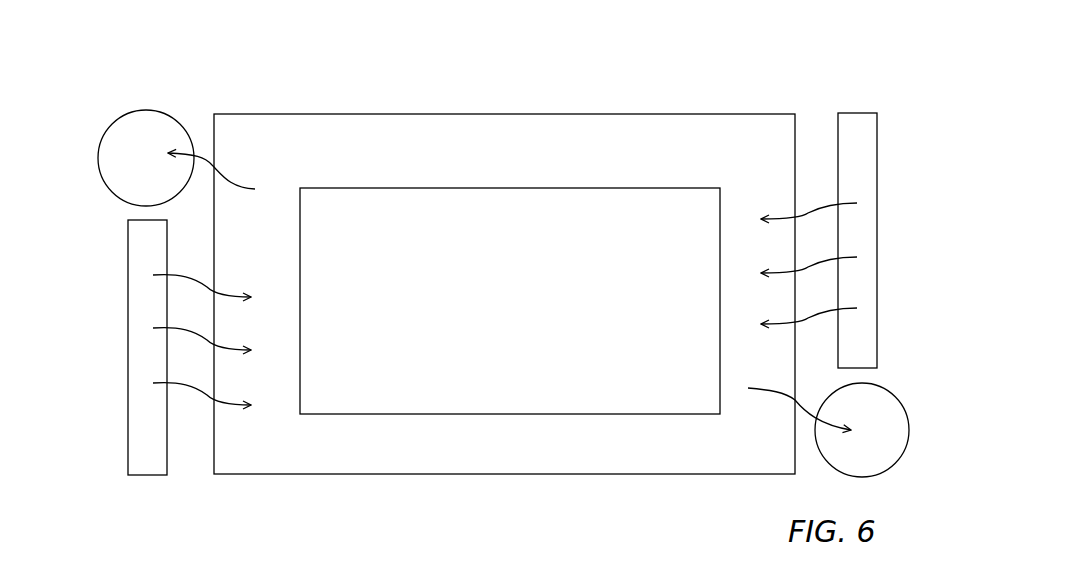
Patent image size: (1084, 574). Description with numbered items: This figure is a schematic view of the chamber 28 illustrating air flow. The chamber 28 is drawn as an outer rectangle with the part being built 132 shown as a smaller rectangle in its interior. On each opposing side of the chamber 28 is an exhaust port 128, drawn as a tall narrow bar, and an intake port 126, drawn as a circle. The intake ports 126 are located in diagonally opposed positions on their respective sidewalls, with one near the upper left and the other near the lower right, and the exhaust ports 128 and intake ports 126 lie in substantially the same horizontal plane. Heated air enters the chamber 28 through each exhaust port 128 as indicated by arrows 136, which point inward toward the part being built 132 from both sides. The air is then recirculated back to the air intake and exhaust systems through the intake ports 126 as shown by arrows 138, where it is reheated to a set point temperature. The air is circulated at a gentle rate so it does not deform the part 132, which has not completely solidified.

The chamber 28 is at (421, 96).
The intake port 126 is at (122, 163).
The exhaust port 128 is at (140, 413).
The part being built 132 is at (503, 312).
The arrows 136 is at (180, 383).
The arrows 138 is at (207, 158).